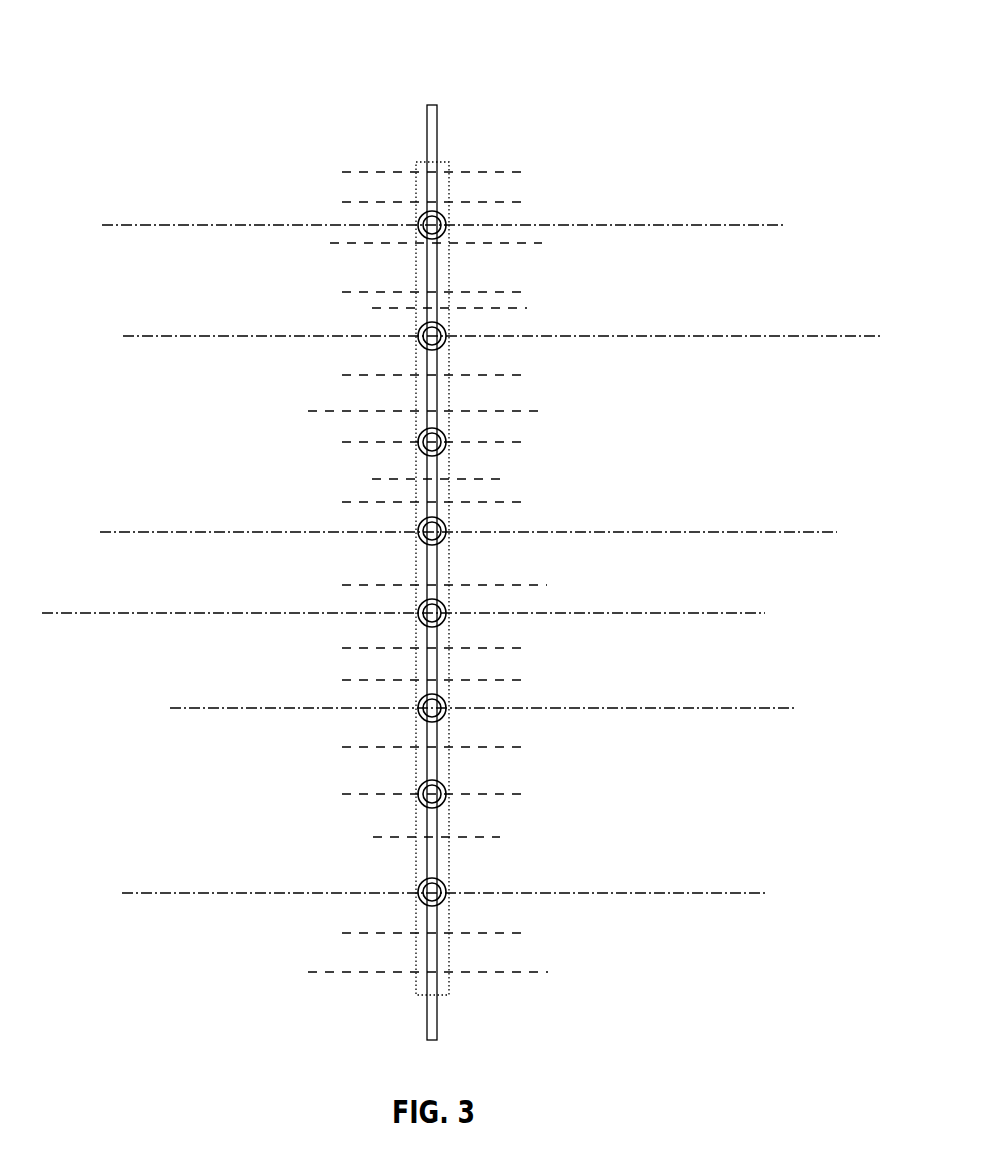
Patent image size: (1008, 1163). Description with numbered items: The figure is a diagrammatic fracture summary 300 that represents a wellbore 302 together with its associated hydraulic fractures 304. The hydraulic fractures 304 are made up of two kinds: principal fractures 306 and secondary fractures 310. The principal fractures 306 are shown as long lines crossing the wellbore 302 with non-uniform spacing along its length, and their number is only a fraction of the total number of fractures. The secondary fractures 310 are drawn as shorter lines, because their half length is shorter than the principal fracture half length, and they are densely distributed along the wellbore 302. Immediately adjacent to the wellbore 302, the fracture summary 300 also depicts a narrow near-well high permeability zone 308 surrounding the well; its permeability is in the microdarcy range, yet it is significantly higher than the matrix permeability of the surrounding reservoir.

The fracture summary 300 is at (782, 100).
The wellbore 302 is at (452, 28).
The hydraulic fractures 304 is at (155, 313).
The principal fractures 306 is at (780, 337).
The near-well high permeability zone 308 is at (443, 162).
The secondary fractures 310 is at (565, 431).